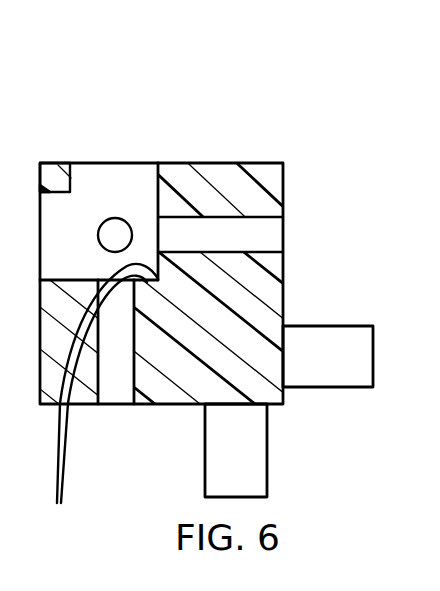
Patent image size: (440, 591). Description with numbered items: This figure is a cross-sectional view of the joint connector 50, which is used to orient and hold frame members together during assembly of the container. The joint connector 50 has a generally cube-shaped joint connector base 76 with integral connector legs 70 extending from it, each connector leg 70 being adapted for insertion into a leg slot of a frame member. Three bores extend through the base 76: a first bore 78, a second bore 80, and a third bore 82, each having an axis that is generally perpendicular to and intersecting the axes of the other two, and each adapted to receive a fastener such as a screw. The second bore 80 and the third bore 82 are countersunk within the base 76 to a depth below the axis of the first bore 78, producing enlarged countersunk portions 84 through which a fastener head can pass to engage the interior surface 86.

The joint connector 50 is at (323, 92).
The connector leg 70 is at (320, 325).
The joint connector base 76 is at (223, 164).
The first bore 78 is at (117, 230).
The second bore 80 is at (143, 167).
The third bore 82 is at (46, 203).
The enlarged countersunk portion 84 is at (88, 185).
The interior surface 86 is at (101, 398).